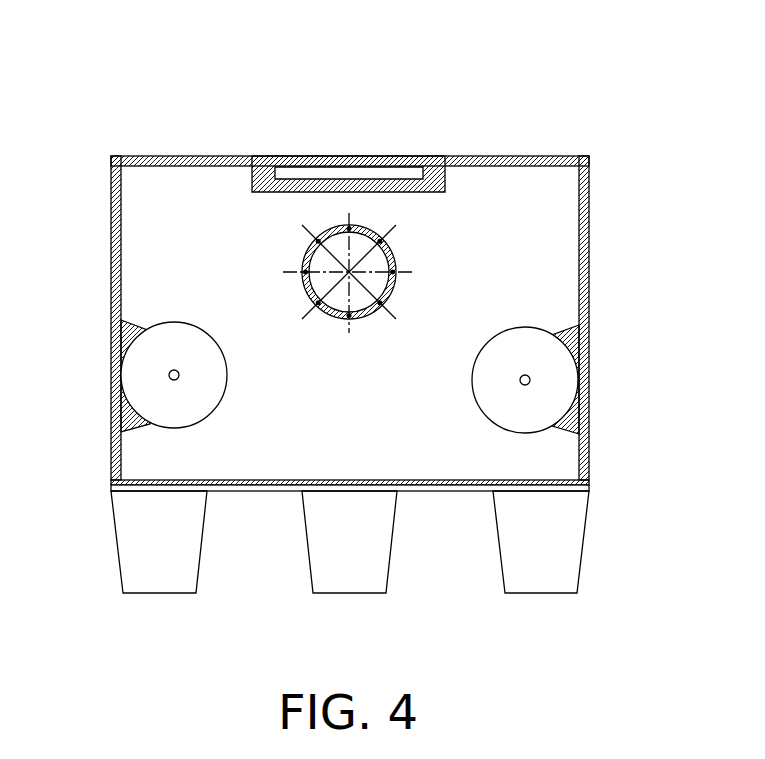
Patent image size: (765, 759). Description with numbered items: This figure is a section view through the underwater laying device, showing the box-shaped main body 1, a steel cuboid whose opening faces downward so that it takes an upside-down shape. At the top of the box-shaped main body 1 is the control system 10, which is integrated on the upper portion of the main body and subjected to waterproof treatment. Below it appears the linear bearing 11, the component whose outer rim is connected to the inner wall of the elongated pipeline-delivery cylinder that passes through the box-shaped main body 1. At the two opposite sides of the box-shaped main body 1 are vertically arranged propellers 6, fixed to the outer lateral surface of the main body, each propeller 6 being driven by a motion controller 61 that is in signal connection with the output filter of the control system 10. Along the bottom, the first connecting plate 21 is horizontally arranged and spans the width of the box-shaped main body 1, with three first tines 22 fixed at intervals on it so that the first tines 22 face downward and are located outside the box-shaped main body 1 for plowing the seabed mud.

The box-shaped main body 1 is at (493, 182).
The control system 10 is at (423, 177).
The linear bearing 11 is at (305, 262).
The propeller 6 is at (143, 363).
The motion controller 61 is at (118, 380).
The first connecting plate 21 is at (563, 490).
The first tine 22 is at (553, 570).